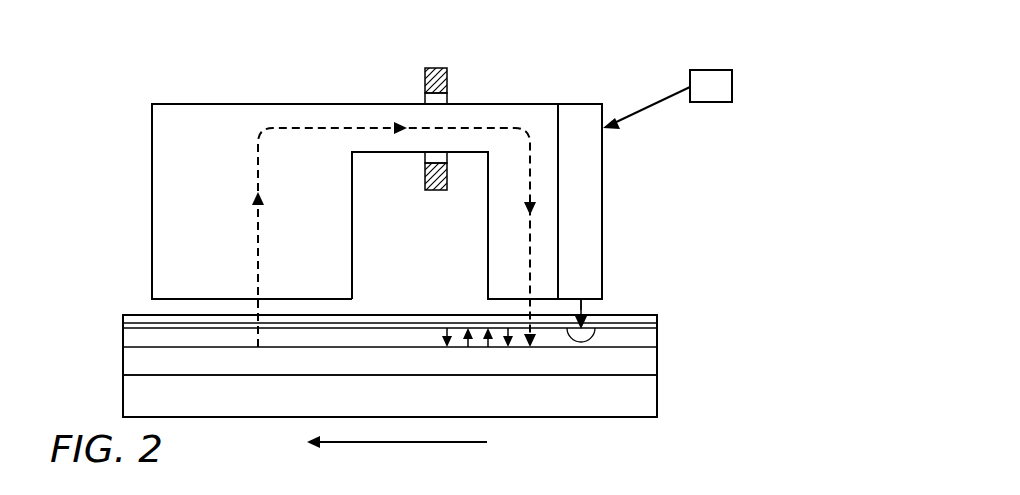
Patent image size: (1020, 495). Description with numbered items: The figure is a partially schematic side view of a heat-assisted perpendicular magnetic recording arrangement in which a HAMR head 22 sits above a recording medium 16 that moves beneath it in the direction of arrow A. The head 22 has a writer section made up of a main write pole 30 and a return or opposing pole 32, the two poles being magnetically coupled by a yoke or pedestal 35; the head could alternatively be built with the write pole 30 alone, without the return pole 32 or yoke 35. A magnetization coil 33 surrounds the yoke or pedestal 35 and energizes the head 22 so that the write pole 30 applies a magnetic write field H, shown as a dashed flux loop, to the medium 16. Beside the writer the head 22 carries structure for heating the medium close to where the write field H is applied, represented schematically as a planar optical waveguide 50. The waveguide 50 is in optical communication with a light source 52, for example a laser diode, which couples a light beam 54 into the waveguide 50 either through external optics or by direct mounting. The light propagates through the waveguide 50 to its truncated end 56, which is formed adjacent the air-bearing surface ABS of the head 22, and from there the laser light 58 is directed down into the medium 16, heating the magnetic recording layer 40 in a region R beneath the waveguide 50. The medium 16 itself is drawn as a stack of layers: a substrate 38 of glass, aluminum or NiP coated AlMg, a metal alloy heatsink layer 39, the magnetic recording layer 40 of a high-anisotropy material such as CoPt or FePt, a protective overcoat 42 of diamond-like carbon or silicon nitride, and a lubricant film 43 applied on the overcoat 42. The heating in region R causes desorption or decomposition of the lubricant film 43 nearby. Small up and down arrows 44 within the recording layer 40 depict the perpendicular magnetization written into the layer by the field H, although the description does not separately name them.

The recording medium 16 is at (338, 325).
The HAMR head 22 is at (362, 177).
The main write pole 30 is at (490, 250).
The return or opposing pole 32 is at (163, 183).
The magnetization coil 33 is at (425, 80).
The yoke or pedestal 35 is at (478, 115).
The substrate 38 is at (130, 398).
The metal alloy heatsink layer 39 is at (123, 363).
The magnetic recording layer 40 is at (123, 336).
The protective overcoat 42 is at (123, 322).
The lubricant film 43 is at (133, 315).
The magnetic domains / bits 44 is at (447, 337).
The planar optical waveguide 50 is at (609, 191).
The light source 52 is at (712, 78).
The light beam 54 is at (650, 108).
The truncated end 56 is at (598, 303).
The laser light 58 is at (582, 310).
The magnetic write field H is at (258, 172).
The air-bearing surface ABS is at (507, 304).
The heated region R is at (595, 330).
The direction of medium movement A is at (377, 442).